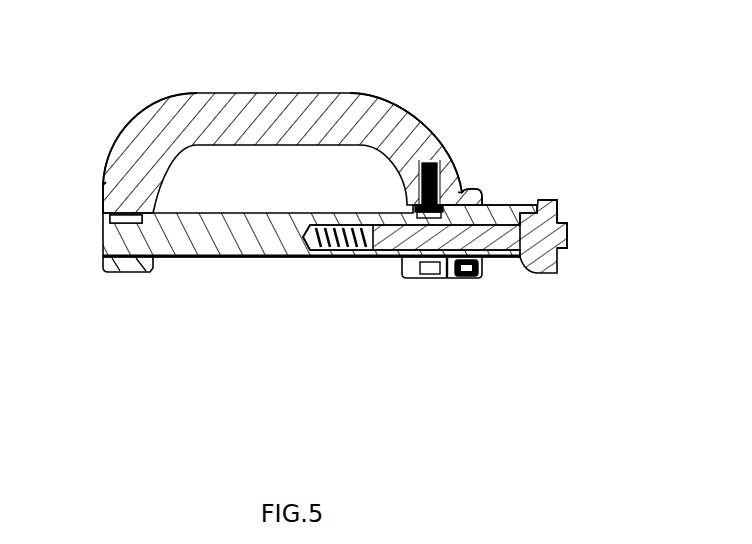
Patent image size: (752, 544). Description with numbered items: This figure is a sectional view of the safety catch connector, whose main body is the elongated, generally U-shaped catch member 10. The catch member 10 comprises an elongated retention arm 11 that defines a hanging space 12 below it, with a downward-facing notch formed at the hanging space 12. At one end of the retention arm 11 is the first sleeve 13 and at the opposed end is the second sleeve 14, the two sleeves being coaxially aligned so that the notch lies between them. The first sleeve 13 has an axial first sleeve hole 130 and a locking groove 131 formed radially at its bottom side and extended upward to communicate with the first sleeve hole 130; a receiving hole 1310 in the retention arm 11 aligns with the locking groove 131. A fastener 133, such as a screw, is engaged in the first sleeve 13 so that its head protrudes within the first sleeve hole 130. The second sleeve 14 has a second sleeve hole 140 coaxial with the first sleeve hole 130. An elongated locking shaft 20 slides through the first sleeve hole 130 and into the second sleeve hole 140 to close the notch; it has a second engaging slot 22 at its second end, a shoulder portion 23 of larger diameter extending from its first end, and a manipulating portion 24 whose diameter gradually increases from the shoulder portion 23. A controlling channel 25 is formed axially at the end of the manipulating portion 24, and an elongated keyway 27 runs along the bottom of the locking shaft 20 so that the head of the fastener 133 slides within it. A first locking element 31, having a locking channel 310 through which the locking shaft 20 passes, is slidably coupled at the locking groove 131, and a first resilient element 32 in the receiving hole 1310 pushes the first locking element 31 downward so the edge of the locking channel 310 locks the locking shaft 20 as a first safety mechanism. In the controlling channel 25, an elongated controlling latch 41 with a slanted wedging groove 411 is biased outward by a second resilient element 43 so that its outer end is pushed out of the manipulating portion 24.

The catch member 10 is at (207, 80).
The retention arm 11 is at (262, 103).
The hanging space 12 is at (190, 163).
The first sleeve 13 is at (470, 191).
The second sleeve 14 is at (133, 270).
The locking shaft 20 is at (270, 212).
The second engaging slot 22 is at (110, 184).
The shoulder portion 23 is at (483, 196).
The manipulating portion 24 is at (548, 200).
The controlling channel 25 is at (521, 235).
The keyway 27 is at (200, 258).
The first locking element 31 is at (429, 274).
The first resilient element 32 is at (463, 191).
The controlling latch 41 is at (568, 238).
The second resilient element 43 is at (334, 252).
The first sleeve hole 130 is at (517, 210).
The locking groove 131 is at (440, 268).
The fastener 133 is at (462, 275).
The second sleeve hole 140 is at (110, 228).
The locking channel 310 is at (420, 268).
The wedging groove 411 is at (404, 207).
The receiving hole 1310 is at (447, 165).